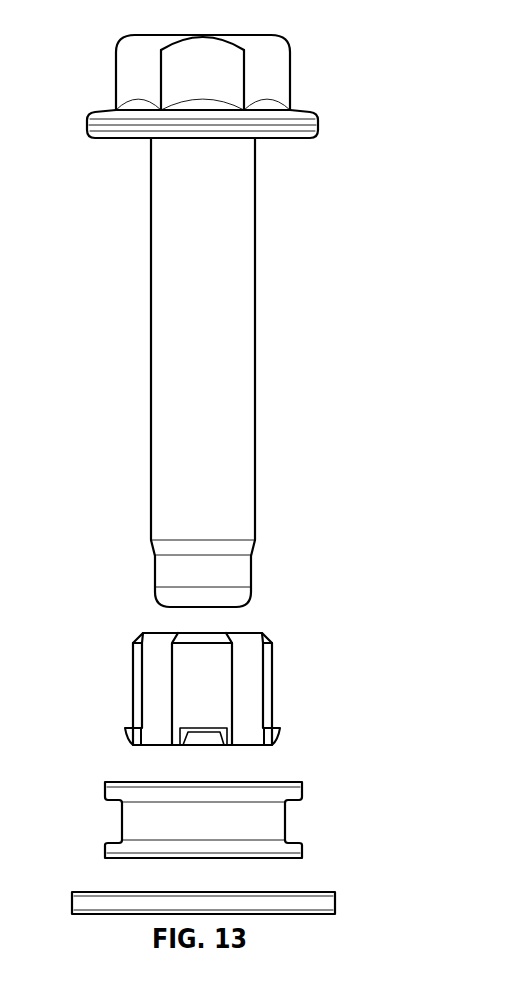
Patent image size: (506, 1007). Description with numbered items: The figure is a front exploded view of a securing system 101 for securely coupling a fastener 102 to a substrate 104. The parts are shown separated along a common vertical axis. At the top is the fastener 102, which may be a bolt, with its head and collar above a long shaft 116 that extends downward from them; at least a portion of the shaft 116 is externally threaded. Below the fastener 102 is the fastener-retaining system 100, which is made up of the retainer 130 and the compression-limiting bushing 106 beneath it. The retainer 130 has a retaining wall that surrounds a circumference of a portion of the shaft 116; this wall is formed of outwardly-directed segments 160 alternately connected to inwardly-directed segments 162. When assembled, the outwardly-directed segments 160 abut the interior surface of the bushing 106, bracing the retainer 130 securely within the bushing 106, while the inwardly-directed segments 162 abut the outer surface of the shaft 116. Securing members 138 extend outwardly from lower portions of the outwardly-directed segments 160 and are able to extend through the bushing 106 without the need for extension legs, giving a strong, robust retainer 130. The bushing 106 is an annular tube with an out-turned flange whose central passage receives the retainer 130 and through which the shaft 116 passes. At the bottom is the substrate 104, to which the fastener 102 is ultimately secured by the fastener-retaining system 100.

The securing system 101 is at (397, 64).
The fastener 102 is at (268, 295).
The shaft 116 is at (255, 378).
The fastener-retaining system 100 is at (306, 633).
The retainer 130 is at (133, 670).
The outwardly-directed segments 160 is at (198, 662).
The inwardly-directed segments 162 is at (245, 652).
The securing members 138 is at (123, 732).
The compression-limiting bushing 106 is at (122, 818).
The substrate 104 is at (320, 892).